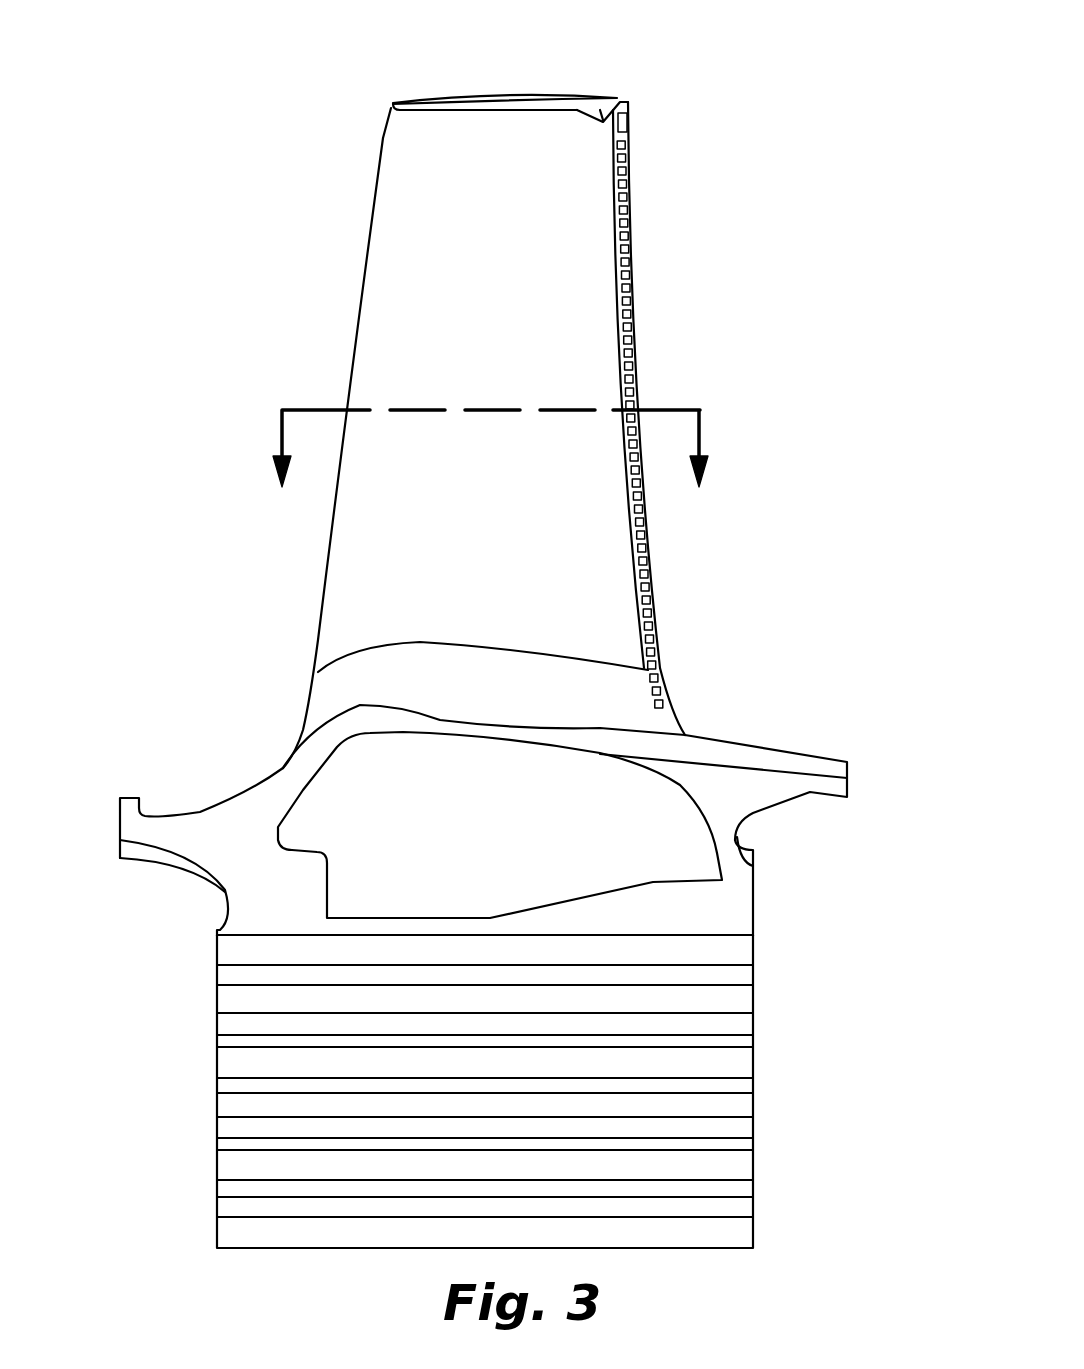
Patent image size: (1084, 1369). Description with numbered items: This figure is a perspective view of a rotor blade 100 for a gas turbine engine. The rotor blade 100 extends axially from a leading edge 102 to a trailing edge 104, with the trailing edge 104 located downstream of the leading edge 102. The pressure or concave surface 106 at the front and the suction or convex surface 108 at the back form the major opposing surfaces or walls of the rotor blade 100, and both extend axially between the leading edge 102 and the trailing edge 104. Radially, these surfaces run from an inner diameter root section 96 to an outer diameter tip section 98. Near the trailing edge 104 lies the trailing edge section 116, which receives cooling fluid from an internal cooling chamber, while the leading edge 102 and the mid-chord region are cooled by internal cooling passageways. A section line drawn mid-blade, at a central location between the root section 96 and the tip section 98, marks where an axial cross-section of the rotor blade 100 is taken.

The rotor blade 100 is at (800, 88).
The root section 96 is at (367, 670).
The tip section 98 is at (477, 55).
The leading edge 102 is at (383, 143).
The trailing edge 104 is at (634, 212).
The pressure surface 106 is at (507, 384).
The suction surface 108 is at (477, 65).
The trailing edge section 116 is at (628, 88).